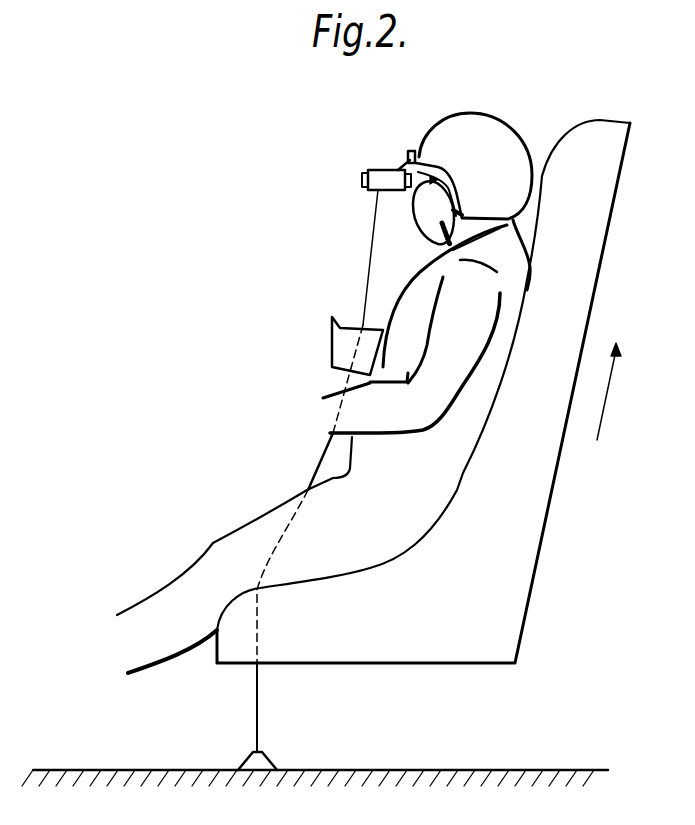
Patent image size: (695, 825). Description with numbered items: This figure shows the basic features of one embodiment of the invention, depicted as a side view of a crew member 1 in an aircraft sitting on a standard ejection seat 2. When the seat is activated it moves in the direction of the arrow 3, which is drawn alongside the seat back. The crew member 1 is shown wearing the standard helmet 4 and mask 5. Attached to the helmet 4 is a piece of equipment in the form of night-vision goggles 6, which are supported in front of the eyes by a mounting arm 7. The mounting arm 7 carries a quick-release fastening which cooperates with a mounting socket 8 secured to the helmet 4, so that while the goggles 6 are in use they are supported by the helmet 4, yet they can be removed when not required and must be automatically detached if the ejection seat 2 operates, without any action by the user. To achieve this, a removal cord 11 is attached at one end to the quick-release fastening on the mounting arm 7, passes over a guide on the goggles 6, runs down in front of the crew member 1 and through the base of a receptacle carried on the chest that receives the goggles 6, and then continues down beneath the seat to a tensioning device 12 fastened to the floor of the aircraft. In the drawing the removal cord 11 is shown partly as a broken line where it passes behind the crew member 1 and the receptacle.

The crew member 1 is at (425, 288).
The ejection seat 2 is at (597, 133).
The arrow 3 is at (603, 413).
The helmet 4 is at (493, 135).
The mask 5 is at (420, 217).
The night-vision goggles 6 is at (375, 188).
The mounting arm 7 is at (398, 165).
The mounting socket 8 is at (409, 151).
The removal cord 11 is at (368, 275).
The tensioning device 12 is at (252, 757).